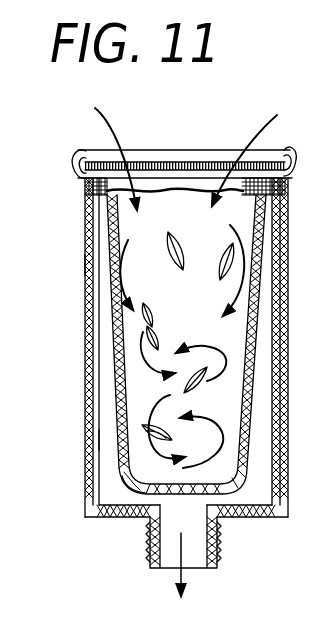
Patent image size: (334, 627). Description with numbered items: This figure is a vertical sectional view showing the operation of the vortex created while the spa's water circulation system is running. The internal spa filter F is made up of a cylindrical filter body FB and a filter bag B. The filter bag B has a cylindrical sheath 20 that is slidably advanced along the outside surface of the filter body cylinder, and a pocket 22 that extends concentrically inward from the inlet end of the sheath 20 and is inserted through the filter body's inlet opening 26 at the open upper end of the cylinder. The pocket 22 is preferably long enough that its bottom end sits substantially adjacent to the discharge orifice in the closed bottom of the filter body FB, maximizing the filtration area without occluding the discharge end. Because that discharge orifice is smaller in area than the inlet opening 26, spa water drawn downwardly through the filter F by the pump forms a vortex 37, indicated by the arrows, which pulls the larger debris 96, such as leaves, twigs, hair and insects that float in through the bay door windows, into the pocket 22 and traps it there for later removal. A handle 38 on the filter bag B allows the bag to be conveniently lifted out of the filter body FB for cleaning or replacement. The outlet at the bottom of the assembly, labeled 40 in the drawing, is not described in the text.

The cylindrical sheath 20 is at (92, 197).
The pocket 22 is at (113, 342).
The inlet opening 26 is at (266, 156).
The vortex 37 is at (182, 346).
The handle 38 is at (74, 152).
The outlet spout 40 is at (148, 545).
The larger debris 96 is at (220, 266).
The internal spa filter F is at (84, 265).
The filter body FB is at (97, 440).
The filter bag B is at (130, 468).